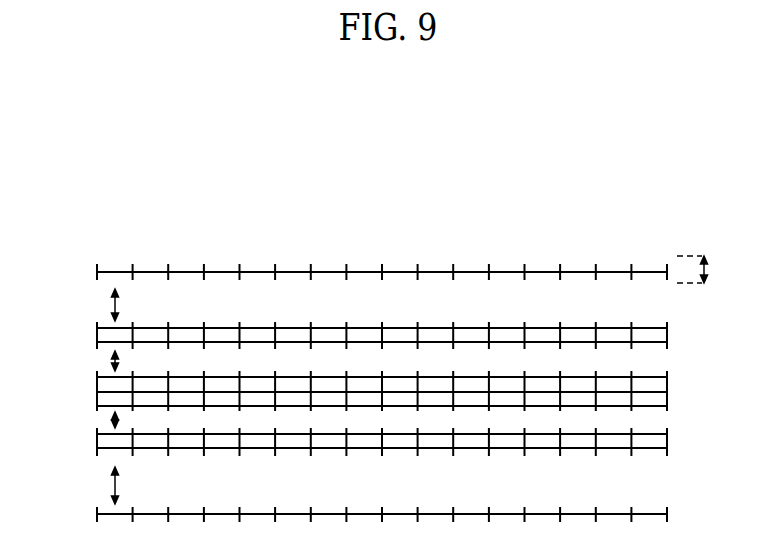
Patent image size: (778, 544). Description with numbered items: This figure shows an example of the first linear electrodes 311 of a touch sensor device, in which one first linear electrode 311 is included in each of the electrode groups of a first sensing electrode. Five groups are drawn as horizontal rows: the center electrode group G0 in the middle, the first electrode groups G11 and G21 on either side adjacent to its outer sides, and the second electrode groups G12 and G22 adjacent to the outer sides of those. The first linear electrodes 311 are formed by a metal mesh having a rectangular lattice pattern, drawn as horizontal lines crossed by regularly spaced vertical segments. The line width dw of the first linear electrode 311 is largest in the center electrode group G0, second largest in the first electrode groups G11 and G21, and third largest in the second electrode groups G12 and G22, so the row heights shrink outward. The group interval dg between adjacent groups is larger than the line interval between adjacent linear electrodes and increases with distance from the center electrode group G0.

The first linear electrode 311 is at (147, 205).
The second electrode group G22 is at (88, 264).
The first electrode group G21 is at (88, 321).
The center electrode group G0 is at (88, 371).
The first electrode group G11 is at (88, 428).
The second electrode group G12 is at (88, 506).
The group interval dg is at (130, 396).
The line width dw is at (709, 270).